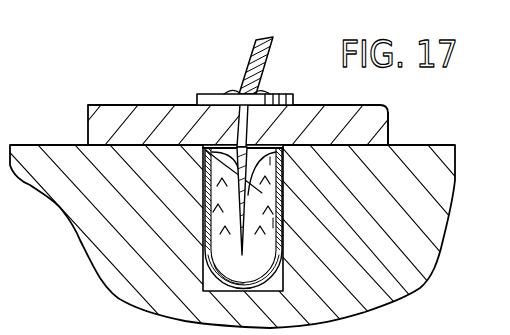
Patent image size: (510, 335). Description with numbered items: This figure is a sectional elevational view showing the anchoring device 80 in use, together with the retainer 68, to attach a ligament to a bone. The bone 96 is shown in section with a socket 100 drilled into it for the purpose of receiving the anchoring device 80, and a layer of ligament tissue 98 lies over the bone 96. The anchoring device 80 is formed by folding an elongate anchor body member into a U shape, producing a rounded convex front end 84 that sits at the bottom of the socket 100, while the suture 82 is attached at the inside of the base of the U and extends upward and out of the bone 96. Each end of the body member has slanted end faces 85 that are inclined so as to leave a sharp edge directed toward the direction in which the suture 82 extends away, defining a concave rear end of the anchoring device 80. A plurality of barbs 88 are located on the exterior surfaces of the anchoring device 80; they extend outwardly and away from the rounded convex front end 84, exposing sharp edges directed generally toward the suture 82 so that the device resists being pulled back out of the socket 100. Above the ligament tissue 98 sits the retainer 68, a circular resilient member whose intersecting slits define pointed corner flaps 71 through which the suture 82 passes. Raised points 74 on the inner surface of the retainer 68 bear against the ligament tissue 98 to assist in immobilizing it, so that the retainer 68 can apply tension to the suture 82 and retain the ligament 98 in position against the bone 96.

The retainer 68 is at (277, 94).
The pointed corner flaps 71 is at (234, 90).
The raised points 74 is at (196, 106).
The anchoring device 80 is at (282, 219).
The suture 82 is at (252, 60).
The rounded convex front end 84 is at (283, 280).
The slanted end faces 85 is at (212, 149).
The barbs 88 is at (215, 188).
The bone 96 is at (72, 144).
The ligament tissue 98 is at (387, 117).
The socket 100 is at (203, 279).